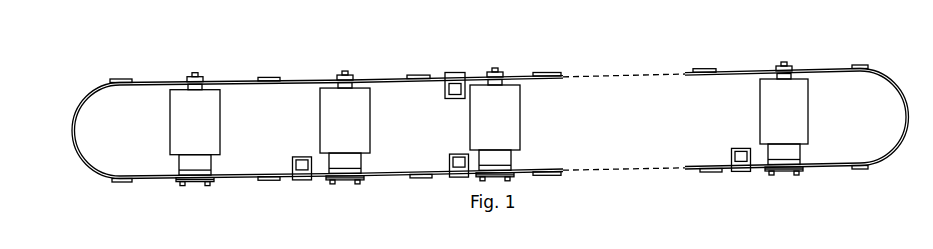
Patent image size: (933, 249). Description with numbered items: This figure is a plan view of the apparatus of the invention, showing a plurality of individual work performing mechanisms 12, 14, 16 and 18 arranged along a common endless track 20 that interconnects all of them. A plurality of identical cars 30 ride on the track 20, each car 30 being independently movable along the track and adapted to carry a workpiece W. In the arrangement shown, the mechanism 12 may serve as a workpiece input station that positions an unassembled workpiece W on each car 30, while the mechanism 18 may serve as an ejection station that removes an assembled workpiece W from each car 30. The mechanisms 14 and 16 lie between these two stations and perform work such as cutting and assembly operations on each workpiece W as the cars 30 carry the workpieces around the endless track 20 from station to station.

The work performing mechanism 12 is at (182, 107).
The work performing mechanism 14 is at (332, 107).
The work performing mechanism 16 is at (483, 101).
The work performing mechanism 18 is at (773, 100).
The endless track 20 is at (822, 70).
The car 30 is at (445, 90).
The workpiece W is at (300, 158).